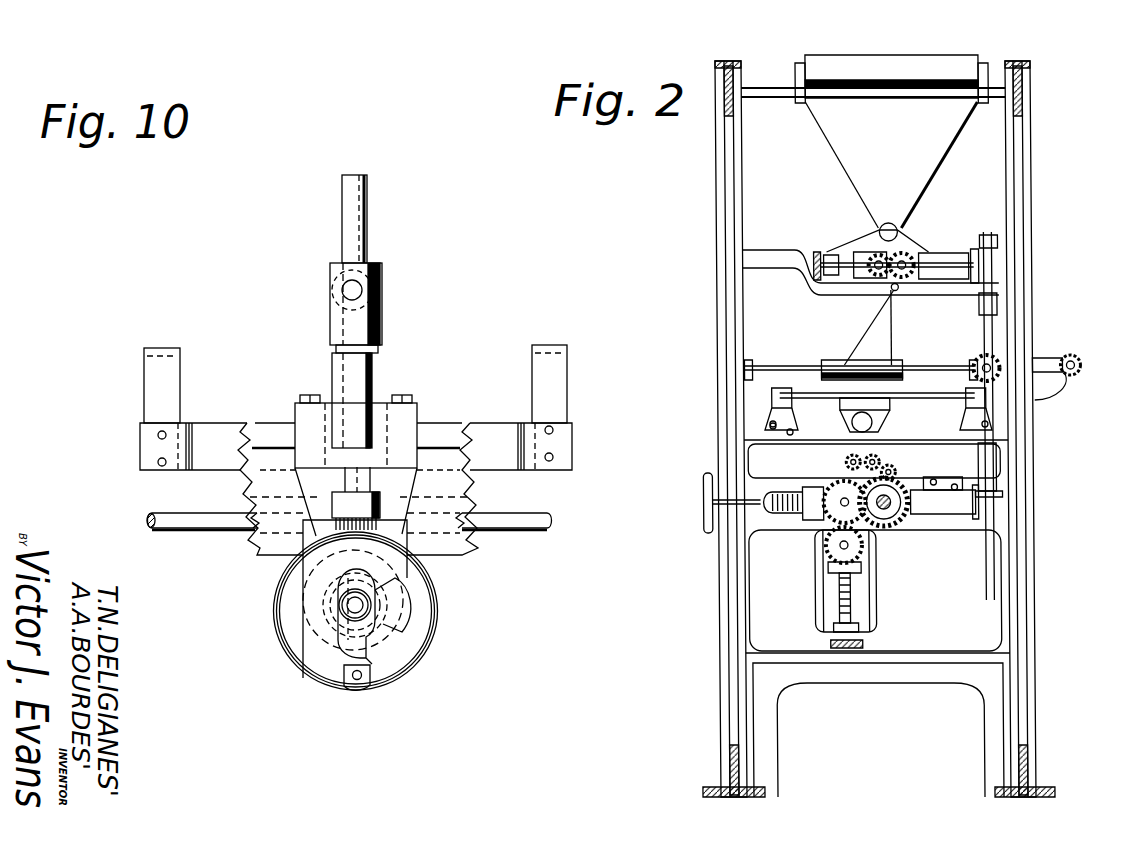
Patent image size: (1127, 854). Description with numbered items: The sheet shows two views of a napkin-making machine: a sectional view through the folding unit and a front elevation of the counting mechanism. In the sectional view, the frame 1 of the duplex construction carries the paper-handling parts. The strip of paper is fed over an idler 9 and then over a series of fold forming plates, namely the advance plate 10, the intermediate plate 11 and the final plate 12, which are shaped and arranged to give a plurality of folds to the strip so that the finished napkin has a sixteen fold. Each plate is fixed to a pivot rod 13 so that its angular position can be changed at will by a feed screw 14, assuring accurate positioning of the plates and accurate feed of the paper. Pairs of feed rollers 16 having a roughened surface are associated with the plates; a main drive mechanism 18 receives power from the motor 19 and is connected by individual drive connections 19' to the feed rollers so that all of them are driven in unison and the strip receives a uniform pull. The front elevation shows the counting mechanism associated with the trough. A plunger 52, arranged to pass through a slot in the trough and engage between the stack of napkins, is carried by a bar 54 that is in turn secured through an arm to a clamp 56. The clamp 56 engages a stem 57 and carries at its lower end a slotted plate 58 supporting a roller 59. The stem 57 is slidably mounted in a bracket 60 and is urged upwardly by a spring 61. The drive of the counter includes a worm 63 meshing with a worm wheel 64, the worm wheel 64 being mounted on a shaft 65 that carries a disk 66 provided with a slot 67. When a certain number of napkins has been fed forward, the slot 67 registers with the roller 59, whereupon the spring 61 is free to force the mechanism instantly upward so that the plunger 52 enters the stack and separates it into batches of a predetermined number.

In FIG. 2, the frame 1 is at (1033, 588).
In FIG. 2, the idler 9 is at (952, 60).
In FIG. 2, the advance plate 10 is at (862, 153).
In FIG. 2, the intermediate plate 11 is at (888, 328).
In FIG. 2, the final plate 12 is at (880, 407).
In FIG. 2, the pivot rod 13 is at (787, 98).
In FIG. 2, the feed screw 14 is at (891, 224).
In FIG. 2, the feed rollers 16 is at (830, 364).
In FIG. 2, the main drive mechanism 18 is at (990, 452).
In FIG. 2, the motor 19 is at (848, 408).
In FIG. 2, the individual drive connections 19' is at (904, 380).
In FIG. 10, the plunger 52 is at (552, 372).
In FIG. 10, the bar 54 is at (492, 455).
In FIG. 10, the clamp 56 is at (331, 282).
In FIG. 10, the stem 57 is at (370, 201).
In FIG. 10, the slotted plate 58 is at (410, 560).
In FIG. 10, the roller 59 is at (372, 678).
In FIG. 10, the bracket 60 is at (331, 386).
In FIG. 10, the spring 61 is at (377, 340).
In FIG. 10, the worm 63 is at (245, 494).
In FIG. 10, the worm wheel 64 is at (400, 627).
In FIG. 10, the shaft 65 is at (355, 606).
In FIG. 10, the disk 66 is at (405, 606).
In FIG. 10, the slot 67 is at (385, 636).